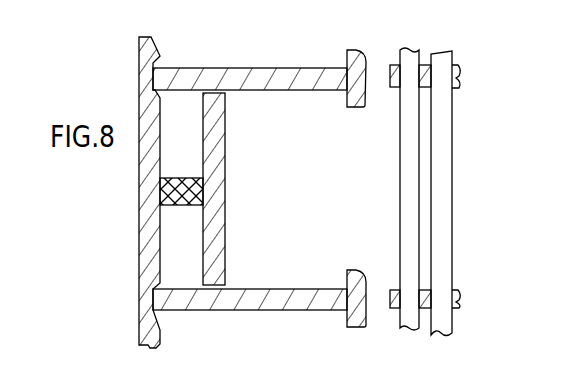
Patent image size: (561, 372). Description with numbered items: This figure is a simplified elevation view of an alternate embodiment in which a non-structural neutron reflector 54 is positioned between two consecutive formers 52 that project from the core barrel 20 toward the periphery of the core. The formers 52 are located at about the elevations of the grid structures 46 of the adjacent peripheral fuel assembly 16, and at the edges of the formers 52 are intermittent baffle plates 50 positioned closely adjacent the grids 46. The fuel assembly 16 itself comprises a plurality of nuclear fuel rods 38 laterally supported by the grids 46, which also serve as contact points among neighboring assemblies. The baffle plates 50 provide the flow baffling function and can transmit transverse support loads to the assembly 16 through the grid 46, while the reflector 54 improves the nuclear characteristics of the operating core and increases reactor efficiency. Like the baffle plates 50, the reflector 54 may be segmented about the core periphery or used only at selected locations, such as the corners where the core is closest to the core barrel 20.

The fuel assembly 16 is at (420, 192).
The core barrel 20 is at (146, 216).
The nuclear fuel rods 38 is at (400, 197).
The grid structures 46 is at (393, 72).
The intermittent baffle plates 50 is at (357, 100).
The formers 52 is at (277, 78).
The non-structural neutron reflector 54 is at (225, 183).